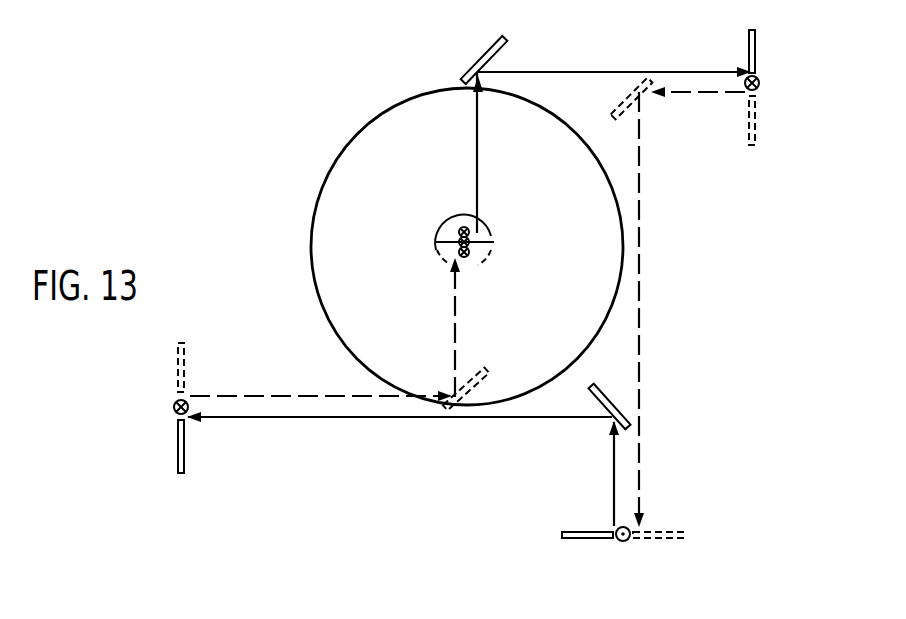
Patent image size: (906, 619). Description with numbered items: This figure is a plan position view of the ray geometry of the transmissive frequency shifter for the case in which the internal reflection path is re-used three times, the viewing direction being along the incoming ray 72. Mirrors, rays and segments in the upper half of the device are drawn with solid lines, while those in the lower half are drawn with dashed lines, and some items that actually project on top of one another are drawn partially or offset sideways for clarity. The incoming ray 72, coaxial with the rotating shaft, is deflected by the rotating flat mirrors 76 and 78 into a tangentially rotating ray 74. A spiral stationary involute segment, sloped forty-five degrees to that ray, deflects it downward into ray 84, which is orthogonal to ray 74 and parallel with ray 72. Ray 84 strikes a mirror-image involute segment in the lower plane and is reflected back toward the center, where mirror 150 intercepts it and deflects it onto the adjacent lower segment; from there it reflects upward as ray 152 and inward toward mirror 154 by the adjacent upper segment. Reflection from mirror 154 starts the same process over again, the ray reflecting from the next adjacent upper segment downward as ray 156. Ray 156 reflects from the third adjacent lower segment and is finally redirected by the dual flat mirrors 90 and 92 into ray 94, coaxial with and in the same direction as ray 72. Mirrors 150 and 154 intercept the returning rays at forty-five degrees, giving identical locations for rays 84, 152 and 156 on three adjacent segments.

The incoming ray 72 is at (460, 222).
The tangentially rotating ray 74 is at (596, 71).
The flat mirror 76 is at (492, 226).
The flat mirror 78 is at (477, 60).
The ray 84 is at (760, 85).
The flat mirror 90 is at (487, 371).
The flat mirror 92 is at (445, 257).
The ray 94 is at (480, 257).
The mirror 150 is at (616, 113).
The ray 152 is at (626, 543).
The mirror 154 is at (616, 404).
The ray 156 is at (173, 406).